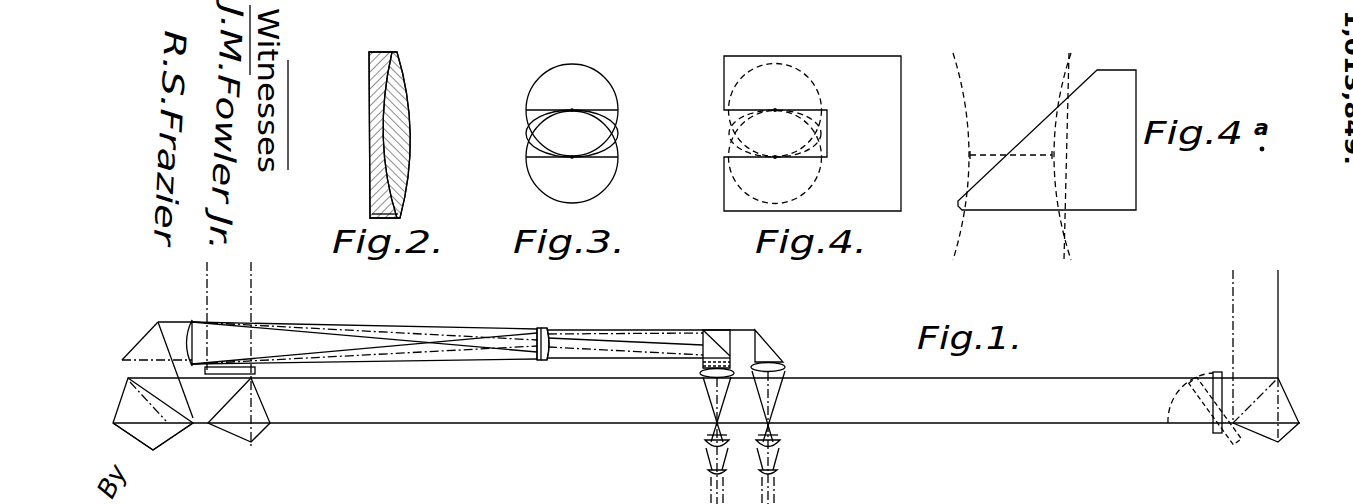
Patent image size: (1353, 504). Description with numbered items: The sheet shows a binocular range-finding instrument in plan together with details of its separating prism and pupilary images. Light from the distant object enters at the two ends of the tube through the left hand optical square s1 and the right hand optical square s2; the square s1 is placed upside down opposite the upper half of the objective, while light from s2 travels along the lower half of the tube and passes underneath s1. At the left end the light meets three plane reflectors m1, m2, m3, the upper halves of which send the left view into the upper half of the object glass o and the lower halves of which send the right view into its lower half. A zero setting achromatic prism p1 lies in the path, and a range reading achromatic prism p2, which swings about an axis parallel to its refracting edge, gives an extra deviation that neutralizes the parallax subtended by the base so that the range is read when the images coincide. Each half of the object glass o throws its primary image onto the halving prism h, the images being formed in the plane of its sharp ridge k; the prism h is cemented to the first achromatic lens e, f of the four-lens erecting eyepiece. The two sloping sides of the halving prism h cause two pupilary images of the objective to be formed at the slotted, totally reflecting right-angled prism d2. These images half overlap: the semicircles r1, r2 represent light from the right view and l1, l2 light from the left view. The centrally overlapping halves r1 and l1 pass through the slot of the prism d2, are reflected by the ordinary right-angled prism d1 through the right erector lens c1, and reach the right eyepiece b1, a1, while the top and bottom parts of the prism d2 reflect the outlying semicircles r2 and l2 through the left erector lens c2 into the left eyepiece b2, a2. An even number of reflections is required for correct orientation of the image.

In FIG. 1, the plane reflector m3 is at (153, 334).
In FIG. 1, the plane reflector m1 is at (125, 393).
In FIG. 1, the plane reflector m2 is at (168, 439).
In FIG. 1, the object glass o is at (188, 320).
In FIG. 1, the zero setting achromatic prism p1 is at (255, 371).
In FIG. 1, the left hand optical square s1 is at (257, 432).
In FIG. 2, the halving prism h is at (368, 78).
In FIG. 1, the halving prism h is at (538, 328).
In FIG. 2, the achromatic lens element e is at (398, 212).
In FIG. 1, the achromatic lens element e is at (541, 359).
In FIG. 2, the achromatic lens element f is at (404, 184).
In FIG. 1, the achromatic lens element f is at (549, 350).
In FIG. 2, the sharp ridge k is at (369, 132).
In FIG. 4, the totally reflecting right-angled prism d2 is at (812, 133).
In FIG. 4A, the totally reflecting right-angled prism d2 is at (1121, 204).
In FIG. 1, the totally reflecting right-angled prism d2 is at (710, 343).
In FIG. 1, the right-angled prism d1 is at (764, 342).
In FIG. 1, the right erector lens c1 is at (781, 366).
In FIG. 1, the left erector lens c2 is at (712, 376).
In FIG. 1, the right eyepiece lens b1 is at (779, 441).
In FIG. 1, the left eyepiece lens b2 is at (706, 440).
In FIG. 1, the right eyepiece lens a1 is at (777, 472).
In FIG. 1, the left eyepiece lens a2 is at (708, 471).
In FIG. 1, the range reading achromatic prism p2 is at (1216, 432).
In FIG. 1, the right hand optical square s2 is at (1286, 436).
In FIG. 3, the pupilary image r1 is at (532, 149).
In FIG. 3, the pupilary image r2 is at (531, 93).
In FIG. 3, the pupilary image l1 is at (534, 114).
In FIG. 3, the pupilary image l2 is at (540, 172).